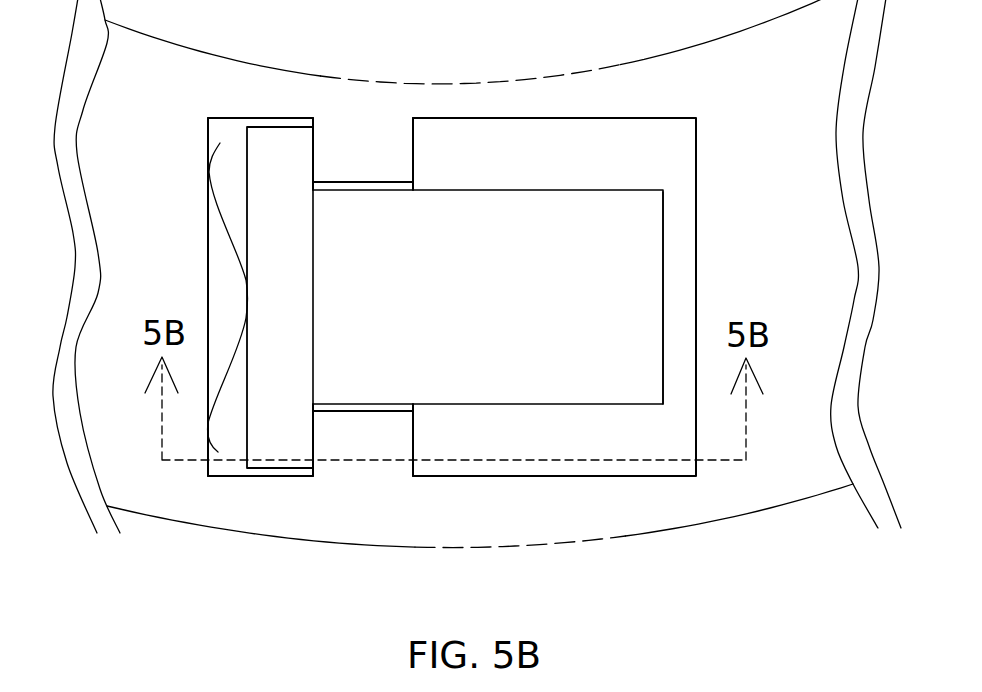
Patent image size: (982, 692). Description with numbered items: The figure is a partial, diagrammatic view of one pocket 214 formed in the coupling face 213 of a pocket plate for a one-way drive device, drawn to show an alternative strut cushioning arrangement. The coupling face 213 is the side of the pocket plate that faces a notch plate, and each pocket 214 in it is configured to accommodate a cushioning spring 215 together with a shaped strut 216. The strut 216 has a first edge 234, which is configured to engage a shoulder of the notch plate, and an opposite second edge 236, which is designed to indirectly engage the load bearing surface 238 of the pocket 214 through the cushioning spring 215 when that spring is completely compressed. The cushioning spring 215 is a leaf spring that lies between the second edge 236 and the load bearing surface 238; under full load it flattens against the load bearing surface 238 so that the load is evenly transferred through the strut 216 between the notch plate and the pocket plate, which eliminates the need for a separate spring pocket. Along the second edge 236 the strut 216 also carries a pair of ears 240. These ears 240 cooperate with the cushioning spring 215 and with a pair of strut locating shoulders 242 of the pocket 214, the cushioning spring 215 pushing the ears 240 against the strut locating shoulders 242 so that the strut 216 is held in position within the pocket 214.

The coupling face 213 is at (794, 89).
The pocket 214 is at (697, 243).
The cushioning spring 215 is at (220, 143).
The strut 216 is at (483, 251).
The first edge 234 is at (662, 290).
The second edge 236 is at (248, 343).
The load bearing surface 238 is at (208, 205).
The ears 240 is at (279, 158).
The strut locating shoulders 242 is at (413, 143).